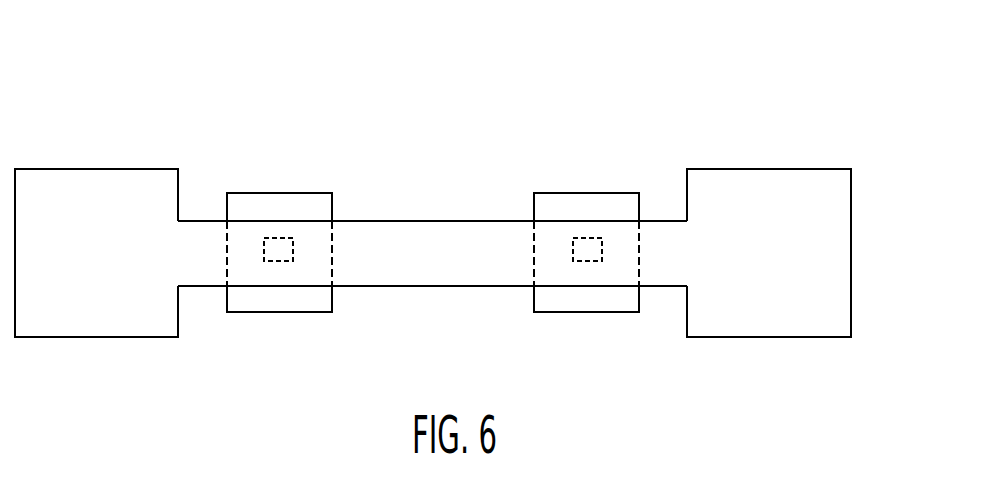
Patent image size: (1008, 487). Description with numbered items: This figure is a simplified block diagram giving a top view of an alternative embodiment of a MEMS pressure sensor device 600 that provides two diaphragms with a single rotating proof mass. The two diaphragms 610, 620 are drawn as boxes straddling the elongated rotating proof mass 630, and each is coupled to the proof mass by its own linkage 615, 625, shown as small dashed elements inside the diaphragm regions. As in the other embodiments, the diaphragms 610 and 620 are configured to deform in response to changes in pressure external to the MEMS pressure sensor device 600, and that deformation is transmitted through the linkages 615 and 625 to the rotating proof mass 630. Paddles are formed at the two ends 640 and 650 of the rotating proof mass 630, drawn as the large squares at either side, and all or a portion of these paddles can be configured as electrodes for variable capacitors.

The MEMS pressure sensor device 600 is at (149, 54).
The diaphragm 610 is at (303, 200).
The linkage 615 is at (279, 253).
The diaphragm 620 is at (608, 200).
The linkage 625 is at (587, 253).
The rotating proof mass 630 is at (851, 257).
The end of rotating proof mass 640 is at (87, 325).
The end of rotating proof mass 650 is at (780, 325).